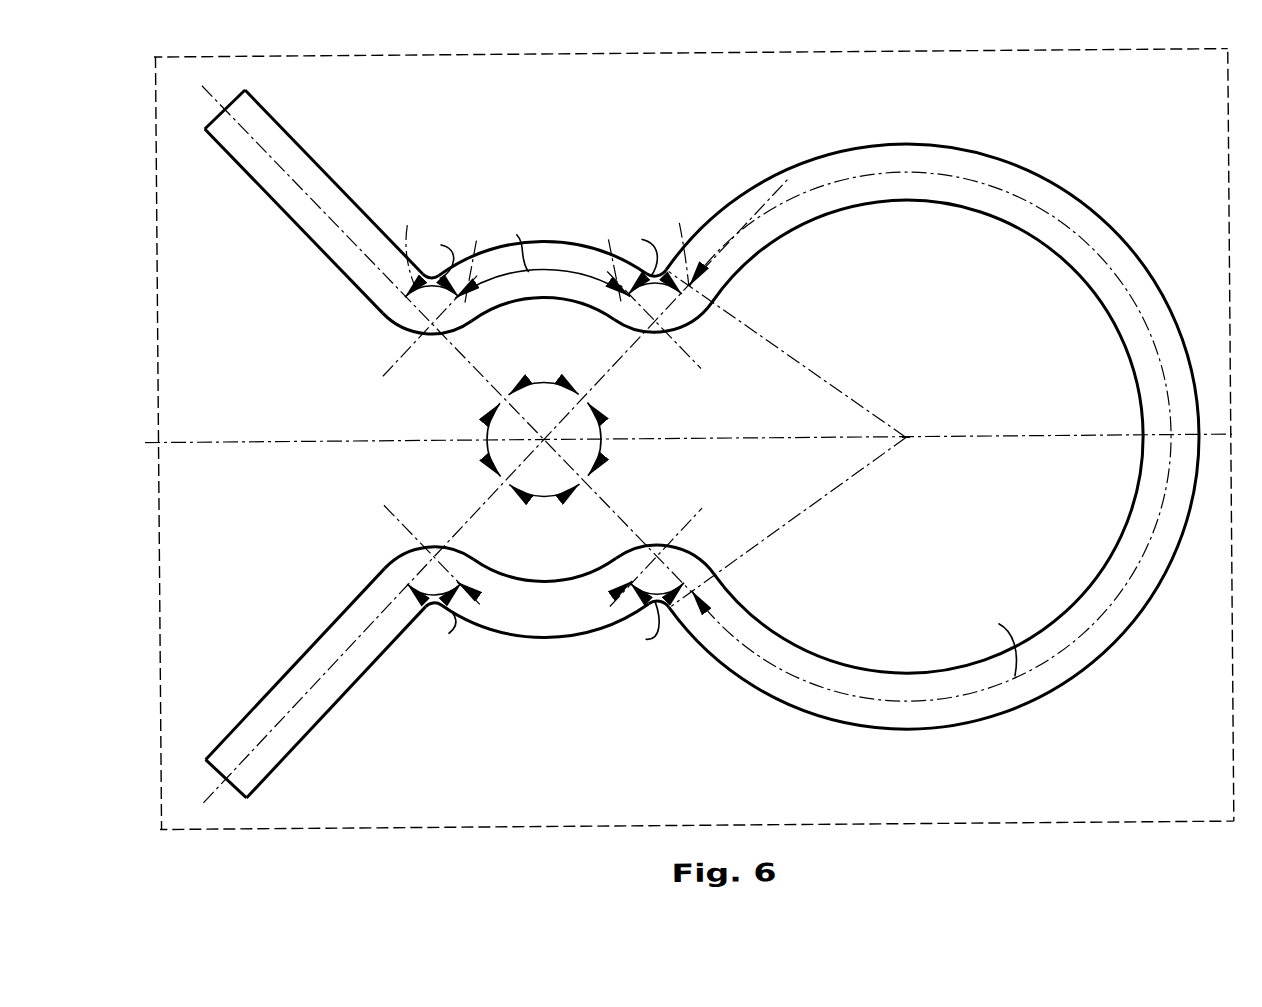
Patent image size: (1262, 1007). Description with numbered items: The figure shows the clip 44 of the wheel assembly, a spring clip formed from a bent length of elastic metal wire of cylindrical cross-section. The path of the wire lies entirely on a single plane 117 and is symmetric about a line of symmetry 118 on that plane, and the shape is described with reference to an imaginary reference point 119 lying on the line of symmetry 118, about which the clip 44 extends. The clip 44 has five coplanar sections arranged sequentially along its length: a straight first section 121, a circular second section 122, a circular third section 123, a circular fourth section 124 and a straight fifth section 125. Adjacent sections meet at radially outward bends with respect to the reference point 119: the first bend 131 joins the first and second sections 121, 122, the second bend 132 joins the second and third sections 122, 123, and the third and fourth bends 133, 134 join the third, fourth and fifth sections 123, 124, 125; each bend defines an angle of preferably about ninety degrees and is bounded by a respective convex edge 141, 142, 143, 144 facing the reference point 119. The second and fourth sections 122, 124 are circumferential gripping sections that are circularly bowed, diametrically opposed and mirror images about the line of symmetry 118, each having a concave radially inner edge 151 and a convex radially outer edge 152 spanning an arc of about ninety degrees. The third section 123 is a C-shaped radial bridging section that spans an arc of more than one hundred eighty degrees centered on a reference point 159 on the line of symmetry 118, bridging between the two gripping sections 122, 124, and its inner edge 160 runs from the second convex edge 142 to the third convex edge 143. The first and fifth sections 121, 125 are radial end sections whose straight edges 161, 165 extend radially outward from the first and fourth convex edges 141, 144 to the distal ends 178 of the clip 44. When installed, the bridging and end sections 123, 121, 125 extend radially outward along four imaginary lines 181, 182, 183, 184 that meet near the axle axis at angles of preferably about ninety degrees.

The clip 44 is at (939, 412).
The plane 117 is at (1073, 56).
The line of symmetry 118 is at (970, 442).
The reference point 119 is at (547, 438).
The first section 121 is at (313, 202).
The second section 122 is at (555, 266).
The third section 123 is at (939, 436).
The fourth section 124 is at (536, 587).
The fifth section 125 is at (315, 683).
The first bend 131 is at (435, 333).
The second bend 132 is at (670, 334).
The third bend 133 is at (656, 545).
The fourth bend 134 is at (436, 546).
The first convex edge 141 is at (437, 337).
The second convex edge 142 is at (654, 334).
The third convex edge 143 is at (653, 545).
The fourth convex edge 144 is at (443, 546).
The concave radially inner edge 151 is at (528, 298).
The convex radially outer edge 152 is at (545, 242).
The reference point 159 is at (906, 441).
The inner edge 160 is at (798, 231).
The straight edge 161 is at (297, 220).
The straight edge 165 is at (300, 655).
The distal ends 178 is at (207, 124).
The imaginary line 181 is at (472, 370).
The imaginary line 182 is at (605, 376).
The imaginary line 183 is at (606, 494).
The imaginary line 184 is at (490, 489).